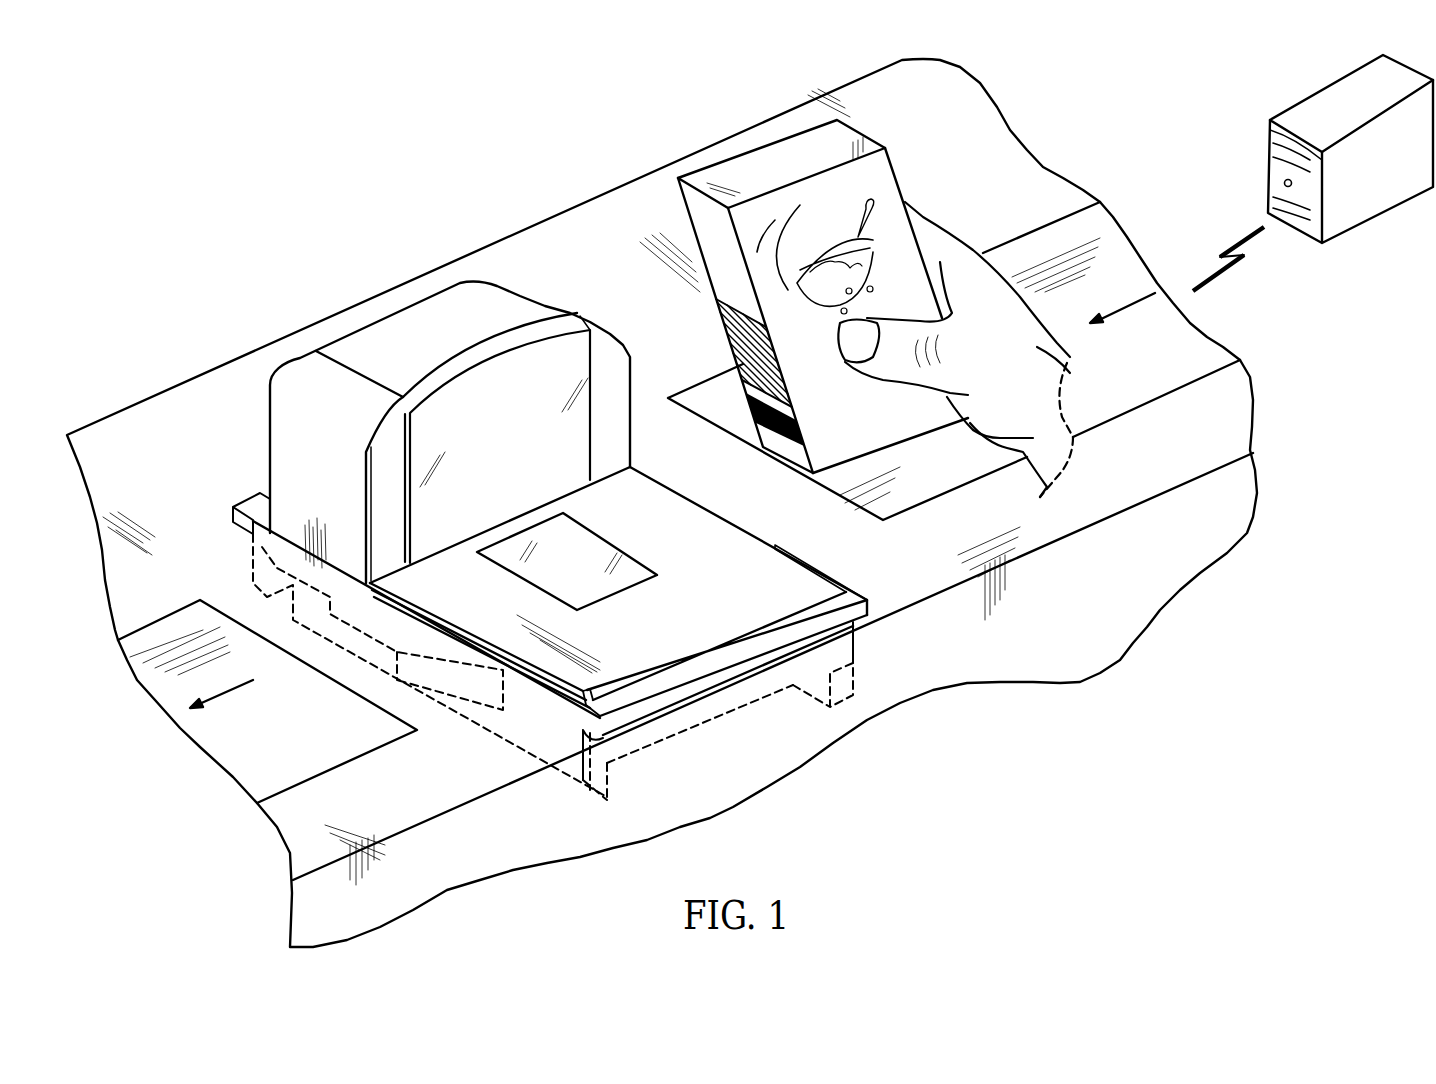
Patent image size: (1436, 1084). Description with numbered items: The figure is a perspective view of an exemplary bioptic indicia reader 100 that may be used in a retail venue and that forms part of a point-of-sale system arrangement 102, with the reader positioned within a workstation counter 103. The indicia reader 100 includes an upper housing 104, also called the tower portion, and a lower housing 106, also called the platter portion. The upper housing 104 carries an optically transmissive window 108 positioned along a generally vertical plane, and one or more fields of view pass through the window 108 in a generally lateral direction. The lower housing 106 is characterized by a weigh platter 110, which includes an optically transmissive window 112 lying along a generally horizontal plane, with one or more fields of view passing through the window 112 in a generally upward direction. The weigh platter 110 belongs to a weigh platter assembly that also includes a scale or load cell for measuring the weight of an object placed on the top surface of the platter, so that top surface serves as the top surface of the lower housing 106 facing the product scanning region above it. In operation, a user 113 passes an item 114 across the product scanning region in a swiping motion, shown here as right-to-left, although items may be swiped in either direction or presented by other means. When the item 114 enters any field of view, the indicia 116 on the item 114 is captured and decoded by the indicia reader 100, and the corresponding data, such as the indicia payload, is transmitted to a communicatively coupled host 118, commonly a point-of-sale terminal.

The bioptic indicia reader 100 is at (165, 330).
The point-of-sale system arrangement 102 is at (548, 200).
The workstation counter 103 is at (167, 478).
The upper housing 104 is at (373, 333).
The lower housing 106 is at (520, 712).
The optically transmissive window 108 is at (483, 413).
The weigh platter 110 is at (733, 612).
The optically transmissive window 112 is at (523, 583).
The user 113 is at (1063, 372).
The item 114 is at (748, 167).
The indicia 116 is at (803, 433).
The host 118 is at (1270, 168).